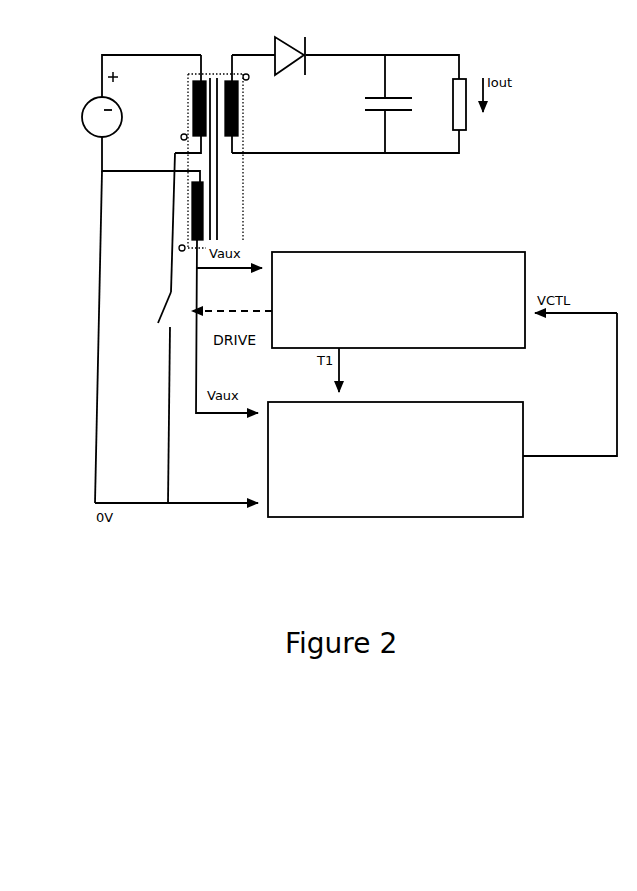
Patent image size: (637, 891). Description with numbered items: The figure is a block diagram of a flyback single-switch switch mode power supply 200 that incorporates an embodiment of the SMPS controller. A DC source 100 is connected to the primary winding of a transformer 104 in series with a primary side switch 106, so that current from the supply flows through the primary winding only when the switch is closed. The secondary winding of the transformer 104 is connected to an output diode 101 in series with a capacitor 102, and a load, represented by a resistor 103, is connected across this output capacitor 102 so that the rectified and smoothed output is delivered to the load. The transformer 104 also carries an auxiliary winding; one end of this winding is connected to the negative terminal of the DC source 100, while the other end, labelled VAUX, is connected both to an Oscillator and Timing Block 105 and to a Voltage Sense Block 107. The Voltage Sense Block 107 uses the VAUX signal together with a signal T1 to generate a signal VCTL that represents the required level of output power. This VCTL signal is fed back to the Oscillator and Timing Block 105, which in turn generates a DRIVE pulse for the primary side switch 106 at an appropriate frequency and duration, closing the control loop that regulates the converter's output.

The DC source 100 is at (117, 104).
The output diode 101 is at (306, 56).
The capacitor 102 is at (375, 114).
The resistor 103 is at (474, 110).
The transformer 104 is at (227, 162).
The Oscillator and Timing Block 105 is at (398, 287).
The primary side switch 106 is at (150, 328).
The Voltage Sense Block 107 is at (395, 448).
The flyback single-switch SMPS 200 is at (84, 652).